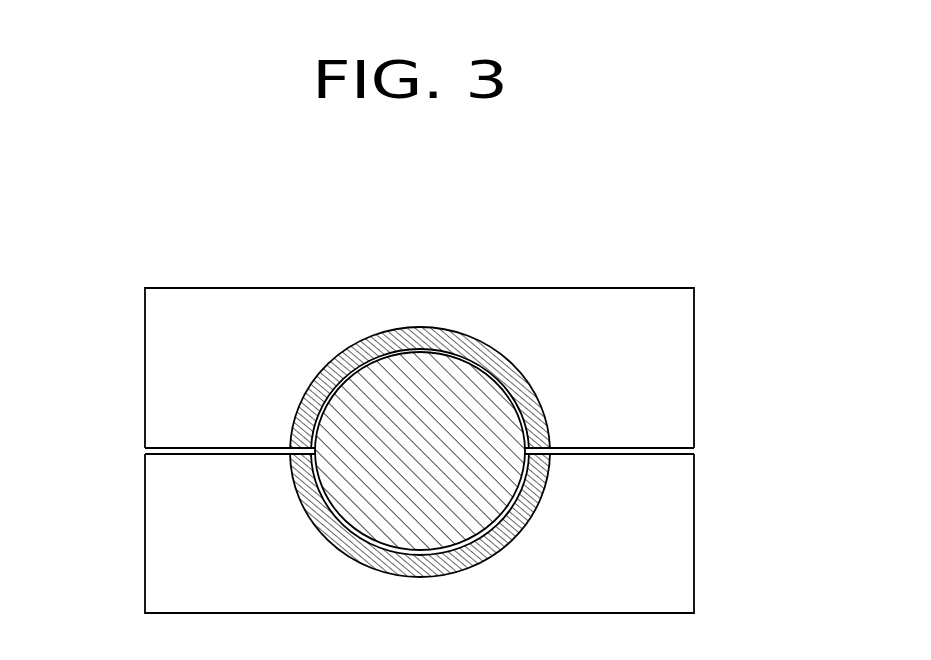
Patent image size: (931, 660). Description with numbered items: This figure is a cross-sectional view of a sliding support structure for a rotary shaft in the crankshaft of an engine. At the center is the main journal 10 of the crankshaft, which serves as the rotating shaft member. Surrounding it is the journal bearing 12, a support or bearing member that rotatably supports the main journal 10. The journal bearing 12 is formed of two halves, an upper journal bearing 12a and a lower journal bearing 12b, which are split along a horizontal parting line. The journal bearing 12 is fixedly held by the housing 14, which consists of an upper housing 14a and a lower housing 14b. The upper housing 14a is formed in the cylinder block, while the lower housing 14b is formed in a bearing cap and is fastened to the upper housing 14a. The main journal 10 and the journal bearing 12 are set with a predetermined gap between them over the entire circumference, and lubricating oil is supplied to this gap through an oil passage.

The main journal 10 is at (423, 382).
The journal bearing 12 is at (551, 452).
The upper journal bearing 12a is at (540, 408).
The lower journal bearing 12b is at (537, 494).
The housing 14 is at (356, 450).
The upper housing 14a is at (174, 412).
The lower housing 14b is at (378, 533).